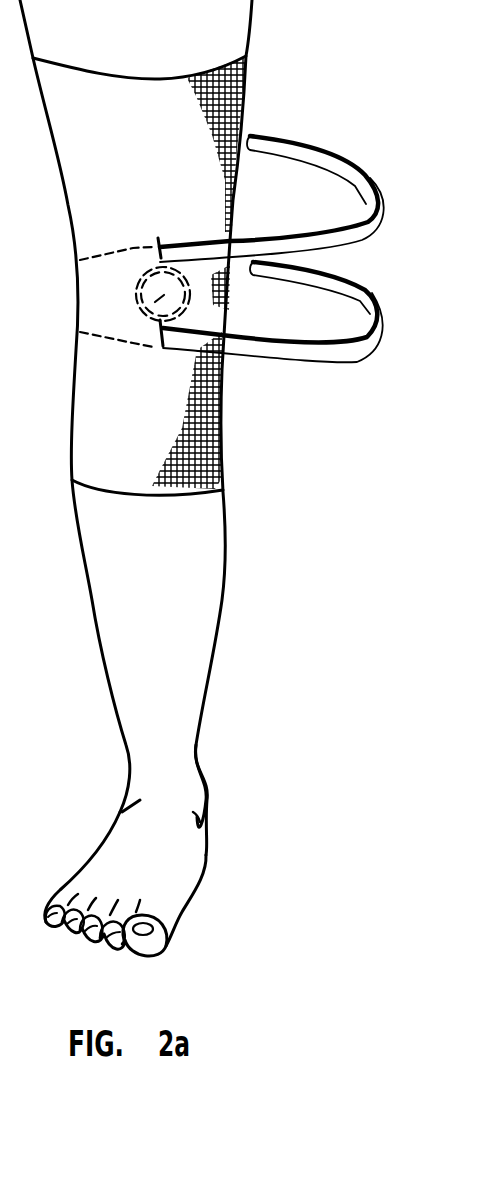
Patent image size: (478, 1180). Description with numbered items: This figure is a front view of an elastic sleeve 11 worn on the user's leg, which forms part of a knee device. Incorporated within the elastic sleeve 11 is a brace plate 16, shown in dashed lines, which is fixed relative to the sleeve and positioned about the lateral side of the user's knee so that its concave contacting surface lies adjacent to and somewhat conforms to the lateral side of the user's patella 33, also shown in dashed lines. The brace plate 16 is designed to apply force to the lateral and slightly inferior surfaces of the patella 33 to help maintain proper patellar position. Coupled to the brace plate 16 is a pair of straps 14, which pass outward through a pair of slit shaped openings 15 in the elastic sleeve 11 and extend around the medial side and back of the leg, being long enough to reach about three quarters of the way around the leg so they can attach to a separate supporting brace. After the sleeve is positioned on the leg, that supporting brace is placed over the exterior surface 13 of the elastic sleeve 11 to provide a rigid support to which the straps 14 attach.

The elastic sleeve 11 is at (258, 108).
The exterior surface 13 is at (161, 135).
The straps 14 is at (283, 249).
The slit shaped openings 15 is at (156, 247).
The brace plate 16 is at (113, 294).
The patella 33 is at (140, 305).